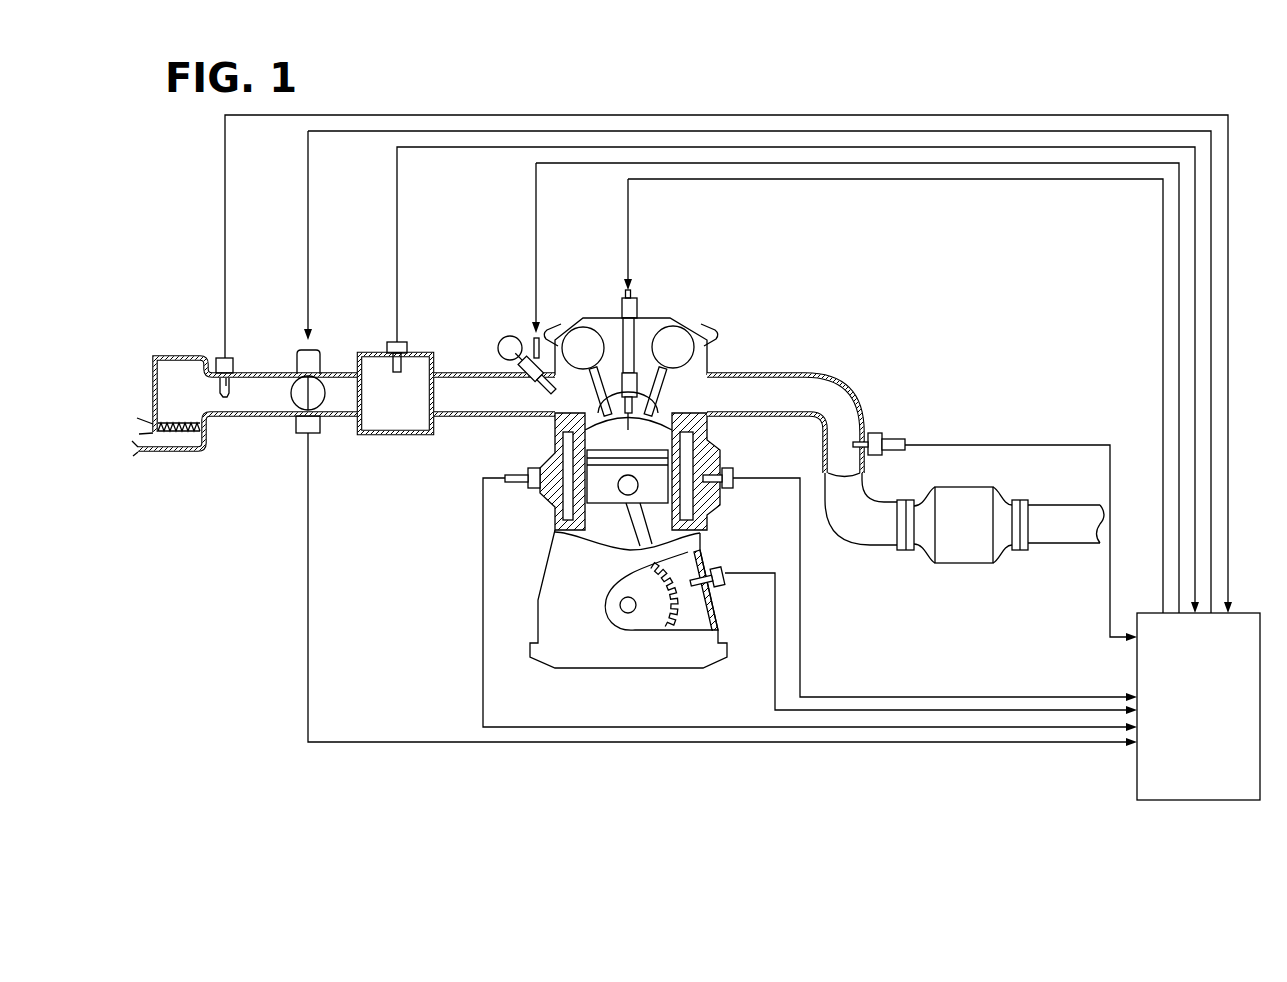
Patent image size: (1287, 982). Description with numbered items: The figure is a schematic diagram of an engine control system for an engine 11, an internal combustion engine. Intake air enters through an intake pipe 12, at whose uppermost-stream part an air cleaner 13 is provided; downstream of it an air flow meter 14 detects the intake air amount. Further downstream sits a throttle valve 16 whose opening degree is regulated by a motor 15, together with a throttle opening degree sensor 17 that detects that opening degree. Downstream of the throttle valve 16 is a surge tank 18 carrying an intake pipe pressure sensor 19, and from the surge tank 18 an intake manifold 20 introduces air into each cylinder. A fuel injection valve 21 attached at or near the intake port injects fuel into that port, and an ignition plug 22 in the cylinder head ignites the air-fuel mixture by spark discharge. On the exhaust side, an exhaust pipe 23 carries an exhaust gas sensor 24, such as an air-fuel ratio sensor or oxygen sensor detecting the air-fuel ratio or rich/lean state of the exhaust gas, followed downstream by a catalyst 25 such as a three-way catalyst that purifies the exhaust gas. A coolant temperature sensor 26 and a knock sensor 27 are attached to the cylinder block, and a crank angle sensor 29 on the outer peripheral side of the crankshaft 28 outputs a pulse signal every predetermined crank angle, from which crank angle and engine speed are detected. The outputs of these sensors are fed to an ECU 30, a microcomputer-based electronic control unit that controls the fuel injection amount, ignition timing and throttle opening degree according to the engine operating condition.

The engine 11 is at (680, 306).
The intake pipe 12 is at (256, 372).
The air cleaner 13 is at (172, 423).
The air flow meter 14 is at (218, 358).
The motor 15 is at (293, 356).
The throttle valve 16 is at (300, 395).
The throttle opening degree sensor 17 is at (315, 437).
The surge tank 18 is at (397, 437).
The intake pipe pressure sensor 19 is at (388, 342).
The intake manifold 20 is at (475, 373).
The fuel injection valve 21 is at (542, 340).
The ignition plug 22 is at (643, 320).
The exhaust pipe 23 is at (807, 368).
The exhaust gas sensor 24 is at (873, 433).
The catalyst 25 is at (957, 487).
The coolant temperature sensor 26 is at (535, 490).
The knock sensor 27 is at (737, 492).
The crankshaft 28 is at (623, 613).
The crank angle sensor 29 is at (720, 585).
The ECU 30 is at (1137, 765).